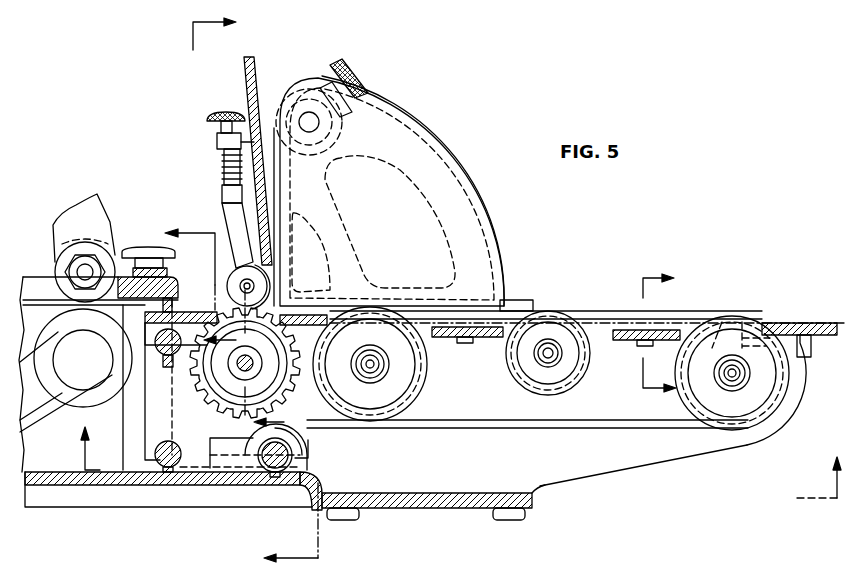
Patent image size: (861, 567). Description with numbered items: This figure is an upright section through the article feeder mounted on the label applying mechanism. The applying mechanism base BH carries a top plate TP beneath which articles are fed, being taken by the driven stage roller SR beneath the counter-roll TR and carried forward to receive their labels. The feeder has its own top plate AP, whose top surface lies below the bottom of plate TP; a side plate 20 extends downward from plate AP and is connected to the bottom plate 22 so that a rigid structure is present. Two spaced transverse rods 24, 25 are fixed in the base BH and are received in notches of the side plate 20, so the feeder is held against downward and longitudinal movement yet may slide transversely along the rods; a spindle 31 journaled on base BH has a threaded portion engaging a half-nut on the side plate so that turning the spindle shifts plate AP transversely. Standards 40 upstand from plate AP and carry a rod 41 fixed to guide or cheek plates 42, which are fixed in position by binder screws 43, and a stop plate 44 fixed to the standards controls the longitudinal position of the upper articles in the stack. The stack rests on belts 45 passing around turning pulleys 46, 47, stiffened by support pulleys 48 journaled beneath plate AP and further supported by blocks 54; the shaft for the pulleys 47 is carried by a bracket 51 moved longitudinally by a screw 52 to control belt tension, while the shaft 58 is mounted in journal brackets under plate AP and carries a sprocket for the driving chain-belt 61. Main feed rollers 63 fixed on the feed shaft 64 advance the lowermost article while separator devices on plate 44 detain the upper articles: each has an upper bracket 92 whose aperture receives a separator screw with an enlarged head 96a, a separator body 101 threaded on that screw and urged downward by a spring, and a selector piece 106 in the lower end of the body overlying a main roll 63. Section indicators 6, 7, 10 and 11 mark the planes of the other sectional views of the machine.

The standards 40 is at (404, 118).
The rod 41 is at (311, 121).
The guide plates 42 is at (420, 143).
The binder screws 43 is at (343, 68).
The stop plate 44 is at (246, 80).
The enlarged head of separator screw 96a is at (222, 116).
The upper bracket 92 is at (217, 142).
The separator body 101 is at (222, 196).
The selector piece 106 is at (240, 272).
The counter-roll TR is at (55, 262).
The top plate TP is at (168, 283).
The driven stage roller SR is at (100, 393).
The applying mechanism base BH is at (122, 502).
The upper transverse rod 24 is at (207, 392).
The main feed rollers 63 is at (172, 432).
The lower transverse rod 25 is at (172, 448).
The driving chain-belt 61 is at (318, 410).
The spindle 31 is at (298, 463).
The belts 45 is at (582, 312).
The blocks 54 is at (478, 330).
The top plate AP is at (800, 323).
The feed shaft 64 is at (252, 370).
The turning pulleys 46 is at (380, 398).
The shaft 58 is at (383, 375).
The support pulleys 48 is at (575, 367).
The turning pulleys 47 is at (742, 412).
The bracket 51 is at (731, 330).
The screw 52 is at (760, 326).
The side plate 20 is at (642, 467).
The bottom plate 22 is at (441, 503).
The section line 11- 11 is at (229, 191).
The section line 7- 7 is at (241, 383).
The section line 6- 6 is at (450, 460).
The section line 10- 10 is at (676, 342).